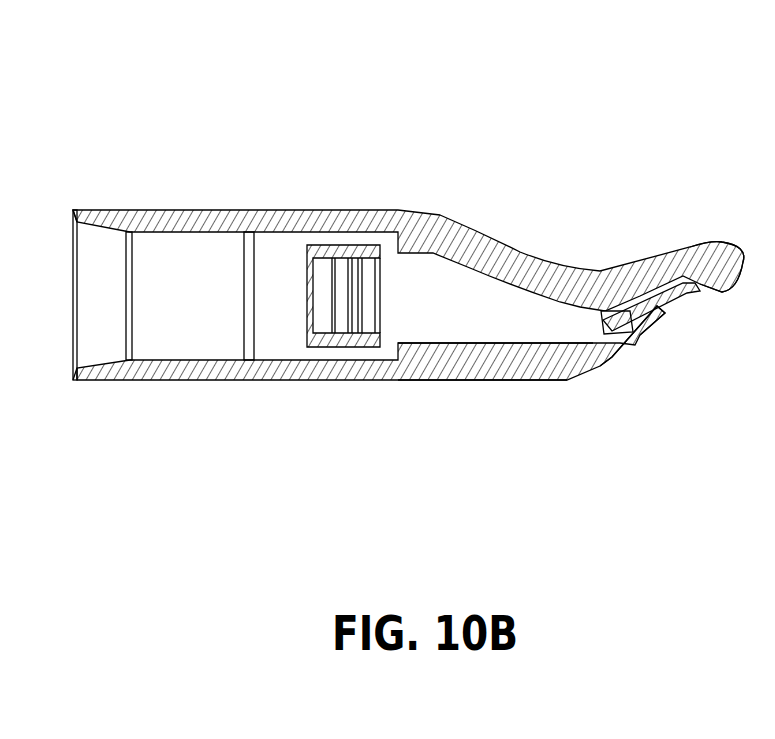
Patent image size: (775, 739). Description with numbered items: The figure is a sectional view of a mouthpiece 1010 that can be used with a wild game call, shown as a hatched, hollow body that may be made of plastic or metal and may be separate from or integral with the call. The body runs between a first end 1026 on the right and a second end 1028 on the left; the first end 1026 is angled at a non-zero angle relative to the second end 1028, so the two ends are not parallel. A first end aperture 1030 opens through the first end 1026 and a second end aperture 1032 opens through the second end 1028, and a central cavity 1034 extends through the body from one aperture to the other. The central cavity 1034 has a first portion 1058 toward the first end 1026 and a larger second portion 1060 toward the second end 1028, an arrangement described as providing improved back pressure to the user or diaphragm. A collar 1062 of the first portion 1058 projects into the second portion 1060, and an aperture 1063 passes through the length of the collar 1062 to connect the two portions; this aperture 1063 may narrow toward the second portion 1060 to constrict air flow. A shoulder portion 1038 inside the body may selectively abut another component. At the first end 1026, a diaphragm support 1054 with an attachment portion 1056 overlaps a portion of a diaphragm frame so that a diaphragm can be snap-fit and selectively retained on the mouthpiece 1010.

The mouthpiece 1010 is at (226, 107).
The second end 1028 is at (73, 382).
The second portion 1060 is at (154, 340).
The shoulder portion 1038 is at (252, 258).
The collar 1062 is at (352, 253).
The aperture 1063 is at (355, 312).
The central cavity 1034 is at (210, 340).
The first portion 1058 is at (487, 325).
The first end 1026 is at (613, 343).
The first end aperture 1030 is at (667, 303).
The diaphragm support 1054 is at (703, 278).
The attachment portion 1056 is at (717, 278).
The second end aperture 1032 is at (70, 315).